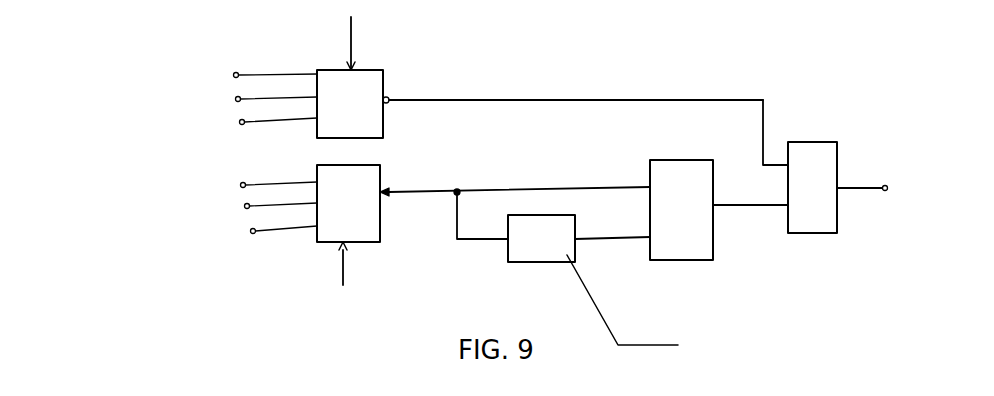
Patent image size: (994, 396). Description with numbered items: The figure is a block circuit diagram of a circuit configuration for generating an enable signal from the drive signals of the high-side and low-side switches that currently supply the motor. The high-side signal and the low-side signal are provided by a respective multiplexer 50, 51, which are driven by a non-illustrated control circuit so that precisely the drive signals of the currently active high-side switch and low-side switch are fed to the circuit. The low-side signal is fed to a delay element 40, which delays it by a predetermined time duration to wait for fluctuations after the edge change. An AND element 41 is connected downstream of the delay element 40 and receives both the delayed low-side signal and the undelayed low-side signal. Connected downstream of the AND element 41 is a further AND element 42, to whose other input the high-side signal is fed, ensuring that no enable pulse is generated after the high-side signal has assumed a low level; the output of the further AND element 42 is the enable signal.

The delay element 40 is at (548, 265).
The AND element 41 is at (688, 265).
The further AND element 42 is at (825, 228).
The multiplexer 50 is at (401, 225).
The multiplexer 51 is at (458, 91).